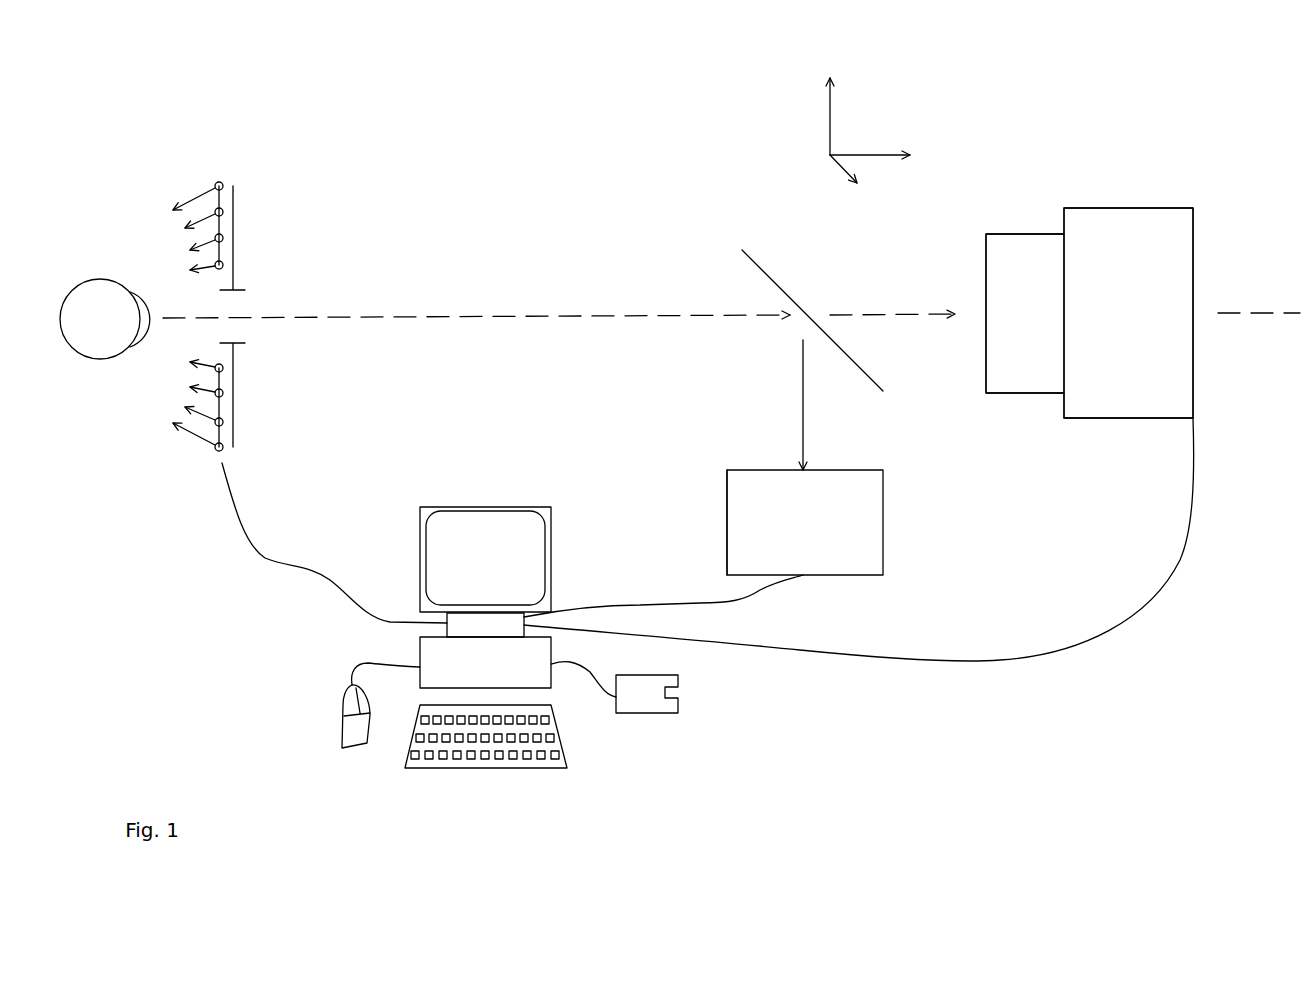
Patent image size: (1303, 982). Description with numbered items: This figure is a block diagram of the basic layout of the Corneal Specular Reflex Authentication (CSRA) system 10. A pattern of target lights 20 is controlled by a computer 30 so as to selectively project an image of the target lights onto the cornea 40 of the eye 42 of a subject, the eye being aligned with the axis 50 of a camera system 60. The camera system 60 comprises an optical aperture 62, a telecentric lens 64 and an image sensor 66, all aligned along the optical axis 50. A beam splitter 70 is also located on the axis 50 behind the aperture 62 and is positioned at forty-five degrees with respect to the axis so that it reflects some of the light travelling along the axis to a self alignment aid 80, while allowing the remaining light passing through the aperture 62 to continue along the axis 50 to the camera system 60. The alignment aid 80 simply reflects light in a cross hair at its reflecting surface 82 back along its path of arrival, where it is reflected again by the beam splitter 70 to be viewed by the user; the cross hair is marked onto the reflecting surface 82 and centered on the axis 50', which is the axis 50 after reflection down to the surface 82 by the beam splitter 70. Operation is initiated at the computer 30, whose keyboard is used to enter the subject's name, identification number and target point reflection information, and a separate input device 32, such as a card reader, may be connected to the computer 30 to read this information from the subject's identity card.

The Corneal Specular Reflex Authentication (CSRA) system 10 is at (165, 120).
The pattern of target lights 20 is at (207, 458).
The computer 30 is at (467, 488).
The separate input device 32 is at (643, 697).
The cornea 40 is at (140, 293).
The eye 42 is at (83, 280).
The optical axis 50 is at (731, 271).
The reflected axis 50' is at (766, 405).
The camera system 60 is at (1142, 180).
The optical aperture 62 is at (253, 292).
The telecentric lens 64 is at (1010, 234).
The image sensor 66 is at (1195, 233).
The beam splitter 70 is at (763, 250).
The self alignment aid 80 is at (805, 522).
The reflecting surface 82 is at (727, 472).